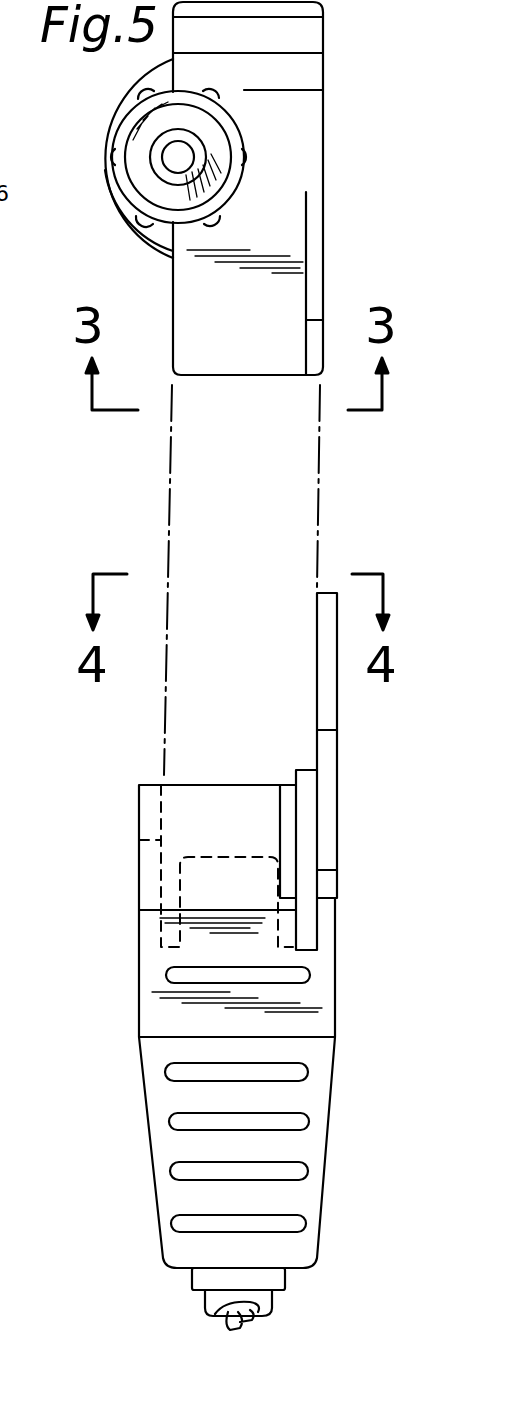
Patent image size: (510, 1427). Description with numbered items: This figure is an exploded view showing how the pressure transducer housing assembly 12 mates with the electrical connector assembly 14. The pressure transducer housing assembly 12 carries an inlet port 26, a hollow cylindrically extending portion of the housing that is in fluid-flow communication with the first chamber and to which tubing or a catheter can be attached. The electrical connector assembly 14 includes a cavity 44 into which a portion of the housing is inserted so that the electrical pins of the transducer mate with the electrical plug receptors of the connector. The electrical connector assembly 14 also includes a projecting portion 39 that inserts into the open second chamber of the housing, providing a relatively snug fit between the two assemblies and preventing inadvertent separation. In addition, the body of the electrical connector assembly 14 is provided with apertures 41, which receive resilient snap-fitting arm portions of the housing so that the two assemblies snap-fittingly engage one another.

The pressure transducer housing assembly 12 is at (330, 54).
The inlet port 26 is at (166, 158).
The apertures 41 is at (304, 914).
The cavity 44 is at (218, 802).
The projecting portion 39 is at (202, 895).
The electrical connector assembly 14 is at (130, 990).